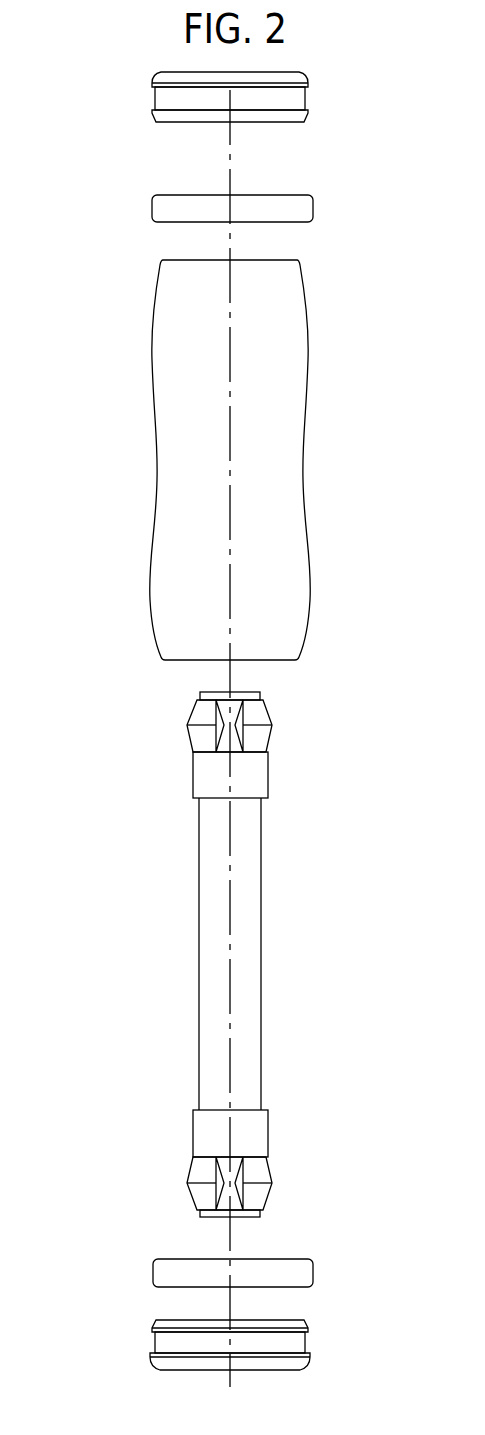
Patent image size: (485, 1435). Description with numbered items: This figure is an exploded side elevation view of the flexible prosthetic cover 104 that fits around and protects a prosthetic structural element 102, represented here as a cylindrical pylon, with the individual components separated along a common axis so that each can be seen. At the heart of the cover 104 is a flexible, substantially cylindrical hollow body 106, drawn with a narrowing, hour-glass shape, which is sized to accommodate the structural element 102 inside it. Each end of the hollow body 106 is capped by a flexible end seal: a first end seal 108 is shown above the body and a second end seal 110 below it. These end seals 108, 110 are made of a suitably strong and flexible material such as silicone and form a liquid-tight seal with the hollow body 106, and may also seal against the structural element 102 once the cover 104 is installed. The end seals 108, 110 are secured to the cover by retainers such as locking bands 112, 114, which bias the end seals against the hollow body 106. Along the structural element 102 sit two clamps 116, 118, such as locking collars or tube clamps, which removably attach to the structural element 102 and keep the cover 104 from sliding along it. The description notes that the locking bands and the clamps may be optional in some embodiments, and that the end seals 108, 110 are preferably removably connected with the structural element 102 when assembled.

The prosthetic structural element 102 is at (258, 947).
The flexible prosthetic cover 104 is at (97, 140).
The hollow body 106 is at (303, 440).
The first flexible end seal 108 is at (302, 100).
The second flexible end seal 110 is at (300, 1348).
The locking band 112 is at (313, 207).
The locking band 114 is at (313, 1278).
The clamp 116 is at (268, 778).
The clamp 118 is at (268, 1142).